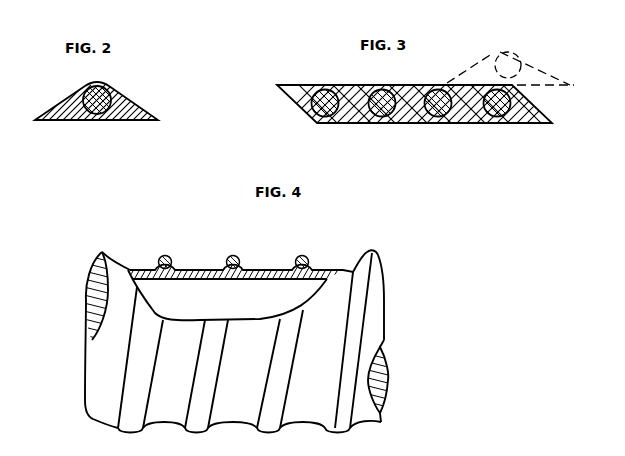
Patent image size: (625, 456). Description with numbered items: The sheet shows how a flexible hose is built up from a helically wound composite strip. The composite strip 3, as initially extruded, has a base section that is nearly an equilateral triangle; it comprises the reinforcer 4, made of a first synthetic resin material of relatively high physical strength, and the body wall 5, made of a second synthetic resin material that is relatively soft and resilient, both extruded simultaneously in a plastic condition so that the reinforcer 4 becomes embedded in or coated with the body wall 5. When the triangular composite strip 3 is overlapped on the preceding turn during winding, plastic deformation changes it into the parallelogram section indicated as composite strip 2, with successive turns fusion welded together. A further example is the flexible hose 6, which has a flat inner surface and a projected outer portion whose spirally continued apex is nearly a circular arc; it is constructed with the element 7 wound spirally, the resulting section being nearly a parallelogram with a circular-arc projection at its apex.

In FIG. 3, the composite strip 2 is at (520, 125).
In FIG. 2, the composite strip 3 is at (84, 152).
In FIG. 3, the composite strip 3 is at (487, 55).
In FIG. 2, the reinforcer 4 is at (82, 121).
In FIG. 2, the body wall 5 is at (48, 121).
In FIG. 4, the flexible hose 6 is at (100, 352).
In FIG. 4, the element 7 is at (212, 274).